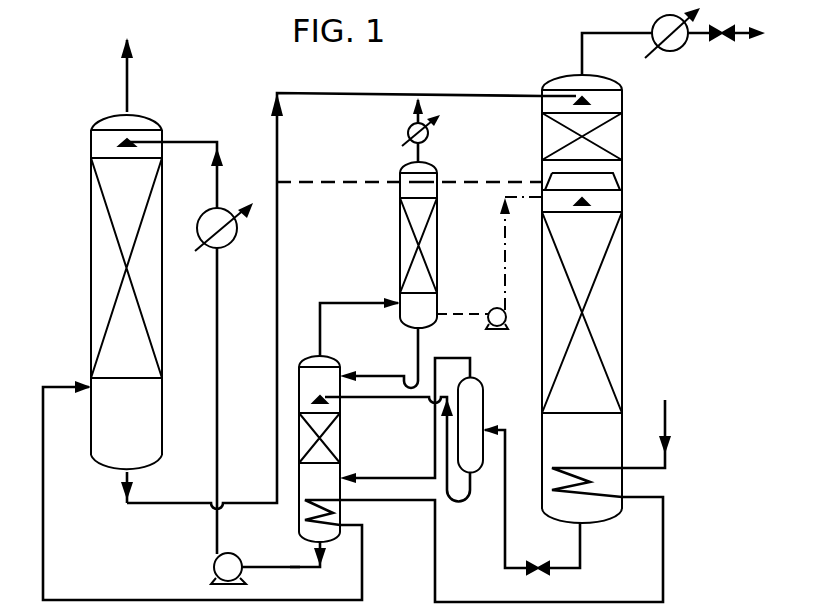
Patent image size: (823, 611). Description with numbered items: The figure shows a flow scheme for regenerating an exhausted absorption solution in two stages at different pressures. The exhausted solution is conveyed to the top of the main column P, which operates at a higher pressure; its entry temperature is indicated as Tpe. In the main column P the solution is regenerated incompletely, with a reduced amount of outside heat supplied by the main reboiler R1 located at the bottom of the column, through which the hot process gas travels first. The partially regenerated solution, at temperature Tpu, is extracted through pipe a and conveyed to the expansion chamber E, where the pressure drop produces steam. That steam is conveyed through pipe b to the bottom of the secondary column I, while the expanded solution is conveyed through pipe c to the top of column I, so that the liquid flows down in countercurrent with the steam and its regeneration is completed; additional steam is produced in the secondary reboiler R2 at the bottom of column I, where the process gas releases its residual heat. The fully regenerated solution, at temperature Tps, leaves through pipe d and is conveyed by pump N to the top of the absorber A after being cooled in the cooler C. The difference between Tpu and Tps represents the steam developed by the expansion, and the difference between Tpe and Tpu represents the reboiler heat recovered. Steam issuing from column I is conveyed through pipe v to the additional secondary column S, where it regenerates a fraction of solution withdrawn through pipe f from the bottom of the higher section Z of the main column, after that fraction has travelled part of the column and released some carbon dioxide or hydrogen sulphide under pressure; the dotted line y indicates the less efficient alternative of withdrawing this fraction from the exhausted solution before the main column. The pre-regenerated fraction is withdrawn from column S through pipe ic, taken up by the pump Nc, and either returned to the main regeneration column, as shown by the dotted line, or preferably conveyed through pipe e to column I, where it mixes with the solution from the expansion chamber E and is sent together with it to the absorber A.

The absorber A is at (116, 270).
The cooler C is at (191, 348).
The additional secondary column S is at (410, 213).
The secondary column I is at (314, 449).
The expansion chamber E is at (470, 425).
The pump N is at (216, 569).
The pump Nc is at (510, 263).
The higher section of the main column Z is at (653, 110).
The main column P is at (594, 360).
The main reboiler R1 is at (663, 434).
The secondary reboiler R2 is at (353, 491).
The temperature of solution entering the main column Tpe is at (351, 291).
The temperature of solution leaving the secondary column Tps is at (283, 554).
The temperature of solution leaving the main column Tpu is at (549, 553).
The dotted line y is at (348, 167).
The pipe f is at (481, 167).
The pipe v is at (360, 319).
The pipe ic is at (462, 303).
The pipe e is at (379, 358).
The pipe c is at (397, 449).
The pipe b is at (405, 420).
The pipe a is at (531, 496).
The pipe d is at (284, 566).